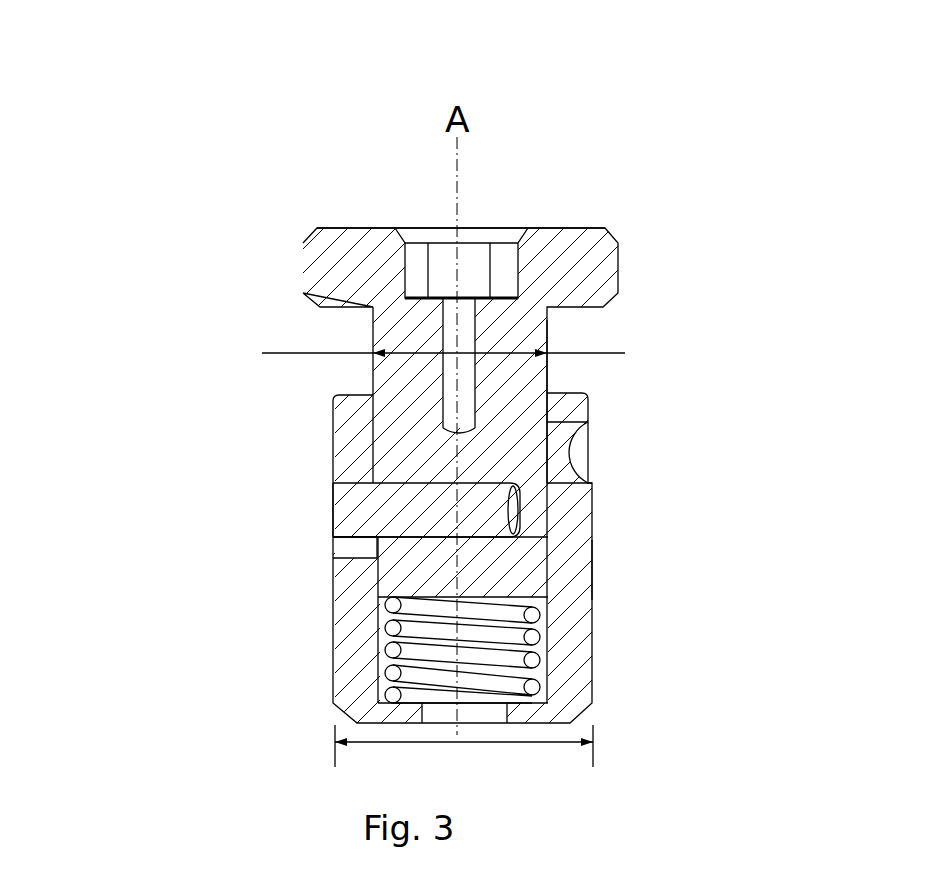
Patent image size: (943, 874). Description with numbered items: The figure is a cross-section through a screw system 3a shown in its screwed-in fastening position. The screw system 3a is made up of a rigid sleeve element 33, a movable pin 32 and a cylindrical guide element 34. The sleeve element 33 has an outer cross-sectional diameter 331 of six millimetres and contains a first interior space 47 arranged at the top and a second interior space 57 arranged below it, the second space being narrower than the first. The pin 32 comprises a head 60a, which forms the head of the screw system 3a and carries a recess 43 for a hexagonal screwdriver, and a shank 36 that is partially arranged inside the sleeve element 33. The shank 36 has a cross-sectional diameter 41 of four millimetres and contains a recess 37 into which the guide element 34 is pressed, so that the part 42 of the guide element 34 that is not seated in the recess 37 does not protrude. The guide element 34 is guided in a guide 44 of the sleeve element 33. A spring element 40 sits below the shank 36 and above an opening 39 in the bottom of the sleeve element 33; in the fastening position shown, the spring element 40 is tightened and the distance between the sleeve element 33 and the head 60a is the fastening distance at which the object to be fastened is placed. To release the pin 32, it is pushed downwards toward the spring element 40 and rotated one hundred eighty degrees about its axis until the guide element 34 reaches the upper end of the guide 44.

The screw system 3a is at (230, 153).
The pin 32 is at (373, 307).
The sleeve element 33 is at (333, 432).
The guide element 34 is at (350, 511).
The shank 36 is at (547, 377).
The recess 37 is at (517, 487).
The opening 39 is at (473, 715).
The spring element 40 is at (497, 643).
The cross-sectional diameter 41 is at (421, 354).
The part of the guide element 42 is at (333, 527).
The recess for a hexagonal screwdriver 43 is at (428, 228).
The guide 44 is at (572, 455).
The first interior space 47 is at (547, 562).
The second interior space 57 is at (373, 658).
The head 60a is at (538, 228).
The outer cross-sectional diameter 331 is at (464, 756).